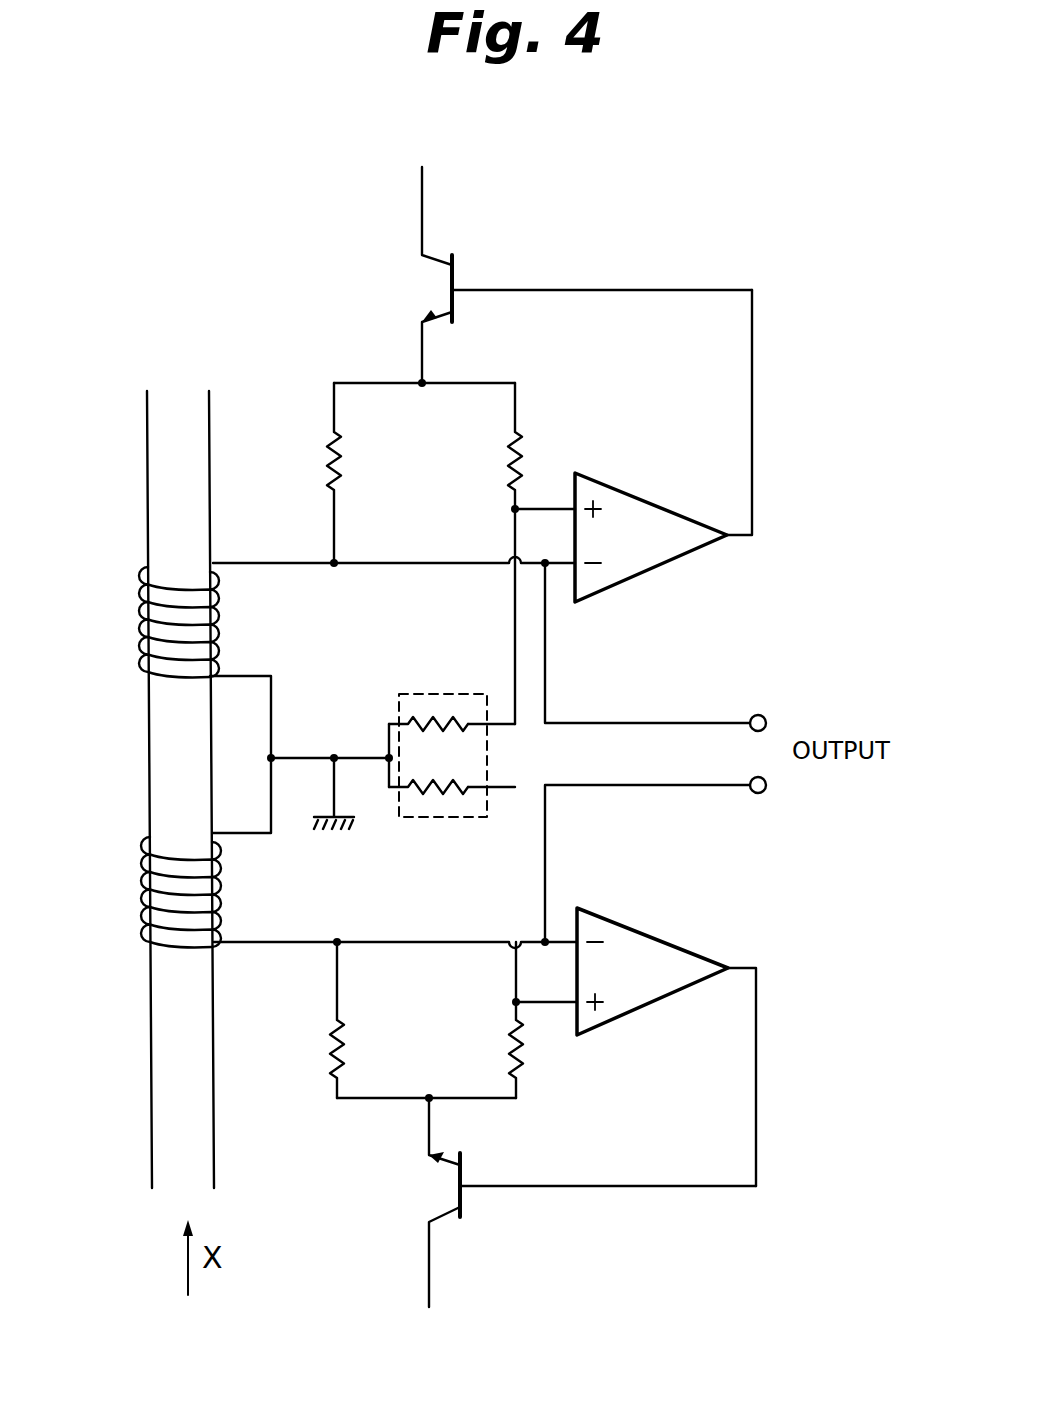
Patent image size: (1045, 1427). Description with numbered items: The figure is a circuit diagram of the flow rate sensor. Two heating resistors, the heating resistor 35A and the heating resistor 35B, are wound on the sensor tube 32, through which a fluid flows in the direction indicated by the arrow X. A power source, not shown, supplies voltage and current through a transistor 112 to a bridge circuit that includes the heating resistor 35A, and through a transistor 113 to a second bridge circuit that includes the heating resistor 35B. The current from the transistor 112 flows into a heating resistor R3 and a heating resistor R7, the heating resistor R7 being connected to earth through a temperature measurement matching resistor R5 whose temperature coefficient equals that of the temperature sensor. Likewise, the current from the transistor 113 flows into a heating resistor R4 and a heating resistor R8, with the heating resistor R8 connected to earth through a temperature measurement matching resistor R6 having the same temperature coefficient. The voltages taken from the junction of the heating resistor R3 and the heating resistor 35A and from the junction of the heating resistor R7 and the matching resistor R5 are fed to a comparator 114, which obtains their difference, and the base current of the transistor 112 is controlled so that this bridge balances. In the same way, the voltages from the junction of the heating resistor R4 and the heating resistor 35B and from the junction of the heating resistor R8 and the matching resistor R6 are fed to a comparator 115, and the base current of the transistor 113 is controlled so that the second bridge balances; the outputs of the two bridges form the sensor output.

The sensor tube 32 is at (214, 1052).
The heating resistor 35A is at (249, 622).
The heating resistor 35B is at (251, 892).
The transistor 112 is at (472, 268).
The transistor 113 is at (470, 1205).
The comparator 114 is at (650, 520).
The comparator 115 is at (656, 956).
The heating resistor R3 is at (358, 473).
The heating resistor R4 is at (362, 1020).
The temperature measurement matching resistor R5 is at (433, 710).
The temperature measurement matching resistor R6 is at (440, 805).
The heating resistor R7 is at (536, 553).
The heating resistor R8 is at (538, 1020).